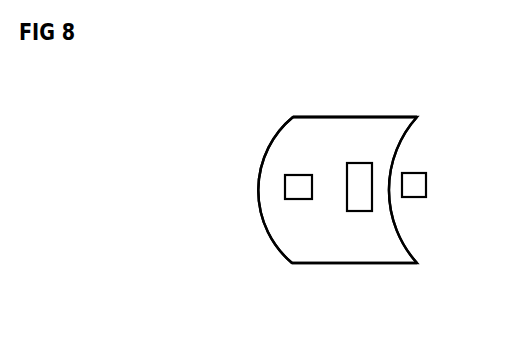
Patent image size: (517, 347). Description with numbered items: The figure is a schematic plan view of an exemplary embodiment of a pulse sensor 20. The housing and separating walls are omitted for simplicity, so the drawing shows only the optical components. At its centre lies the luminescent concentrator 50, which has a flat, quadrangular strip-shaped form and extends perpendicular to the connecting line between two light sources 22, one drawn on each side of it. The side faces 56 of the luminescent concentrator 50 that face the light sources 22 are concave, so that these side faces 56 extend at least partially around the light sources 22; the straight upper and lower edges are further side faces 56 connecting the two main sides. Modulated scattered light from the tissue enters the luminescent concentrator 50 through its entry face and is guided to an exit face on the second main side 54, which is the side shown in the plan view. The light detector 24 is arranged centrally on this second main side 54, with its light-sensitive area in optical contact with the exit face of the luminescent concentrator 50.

The pulse sensor 20 is at (279, 90).
The light source 22 is at (284, 188).
The light detector 24 is at (360, 211).
The luminescent concentrator 50 is at (344, 100).
The second main side 54 is at (330, 255).
The side face 56 is at (391, 116).